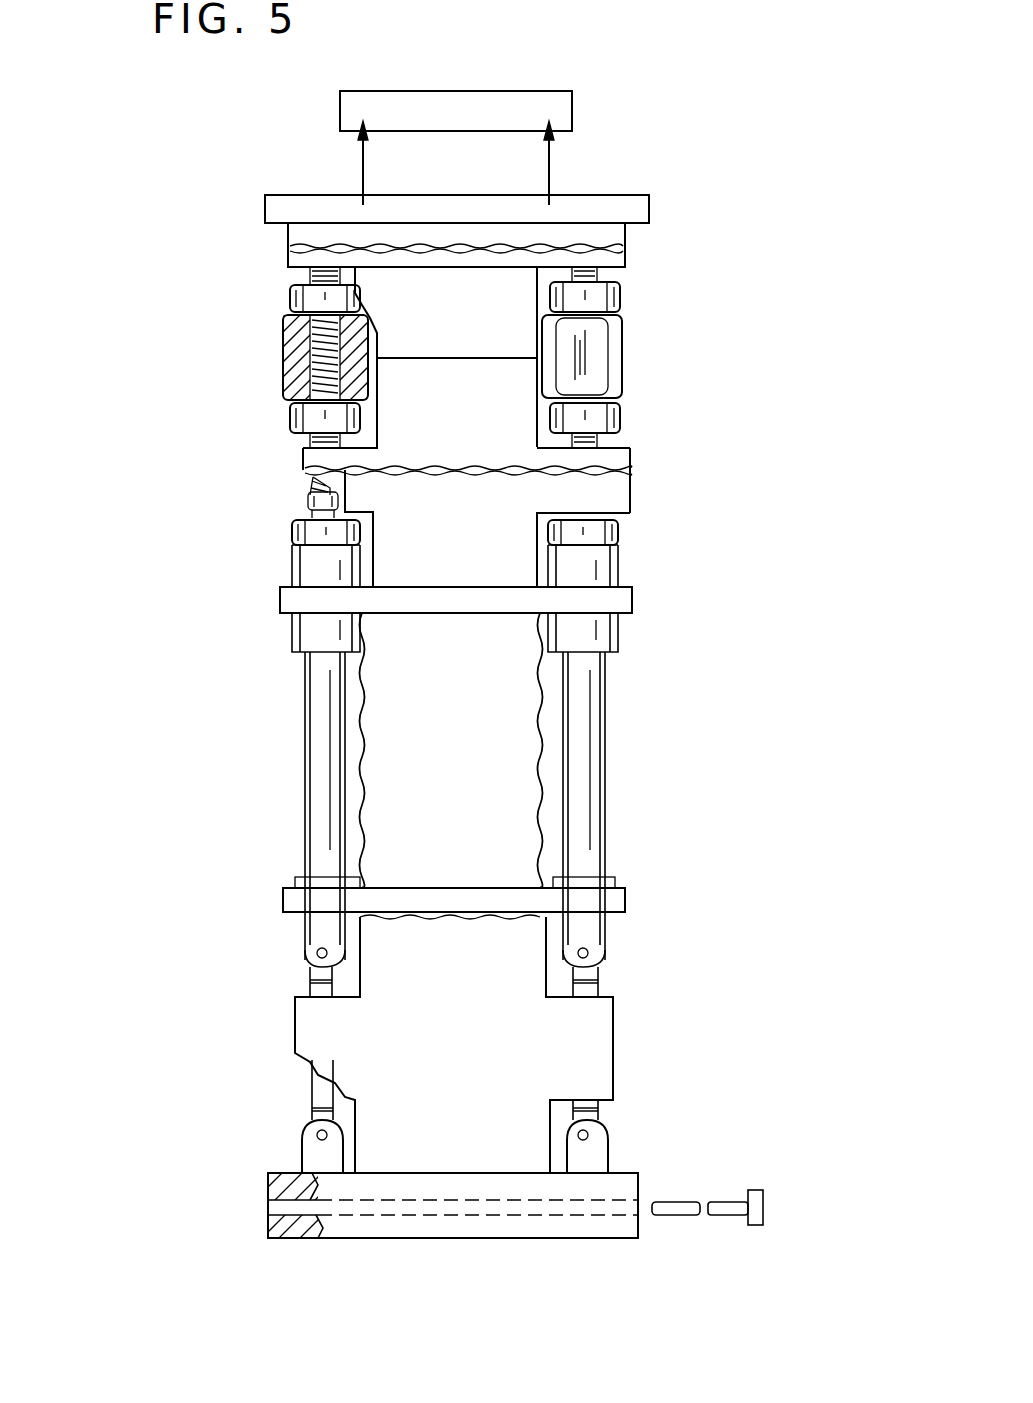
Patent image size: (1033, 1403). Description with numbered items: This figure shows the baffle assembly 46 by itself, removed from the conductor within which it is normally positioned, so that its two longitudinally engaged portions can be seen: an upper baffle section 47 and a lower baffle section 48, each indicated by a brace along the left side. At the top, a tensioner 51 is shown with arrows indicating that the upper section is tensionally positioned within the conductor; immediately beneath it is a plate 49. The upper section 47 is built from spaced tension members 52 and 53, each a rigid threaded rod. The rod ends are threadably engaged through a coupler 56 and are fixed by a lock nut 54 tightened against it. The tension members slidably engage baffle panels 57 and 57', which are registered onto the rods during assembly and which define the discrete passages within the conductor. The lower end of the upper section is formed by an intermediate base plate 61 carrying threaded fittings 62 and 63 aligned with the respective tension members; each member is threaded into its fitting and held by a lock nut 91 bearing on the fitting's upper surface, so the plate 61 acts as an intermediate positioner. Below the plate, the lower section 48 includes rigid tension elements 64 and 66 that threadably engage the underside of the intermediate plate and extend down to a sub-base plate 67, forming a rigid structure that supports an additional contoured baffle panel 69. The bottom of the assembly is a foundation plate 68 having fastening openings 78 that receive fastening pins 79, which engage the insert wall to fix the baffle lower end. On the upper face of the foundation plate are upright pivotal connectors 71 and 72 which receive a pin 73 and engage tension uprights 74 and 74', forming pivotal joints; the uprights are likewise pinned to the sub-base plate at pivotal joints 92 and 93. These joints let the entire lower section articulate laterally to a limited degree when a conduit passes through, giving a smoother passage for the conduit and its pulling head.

The baffle assembly 46 is at (636, 608).
The upper baffle section 47 is at (172, 607).
The lower baffle section 48 is at (134, 606).
The upper plate 49 is at (637, 205).
The tensioner 51 is at (553, 113).
The tension member 52 is at (298, 269).
The tension member 53 is at (612, 284).
The lock nut 54 is at (612, 301).
The coupler 56 is at (622, 364).
The baffle panel 57 is at (585, 412).
The baffle panel 57' is at (434, 177).
The intermediate base plate 61 is at (285, 598).
The threaded fitting 62 is at (300, 556).
The threaded fitting 63 is at (600, 566).
The rigid tension element 64 is at (322, 758).
The rigid tension element 66 is at (590, 783).
The sub-base plate 67 is at (612, 901).
The foundation plate 68 is at (606, 1190).
The baffle panel 69 is at (505, 727).
The pivotal connector 71 is at (315, 1157).
The pivotal connector 72 is at (590, 1152).
The pin 73 is at (318, 1133).
The tension upright 74 is at (275, 987).
The tension upright 74' is at (631, 985).
The fastening opening 78 is at (270, 1207).
The fastening pin 79 is at (730, 1212).
The lock nut 91 is at (300, 518).
The pivotal joint 92 is at (318, 938).
The pivotal joint 93 is at (614, 950).